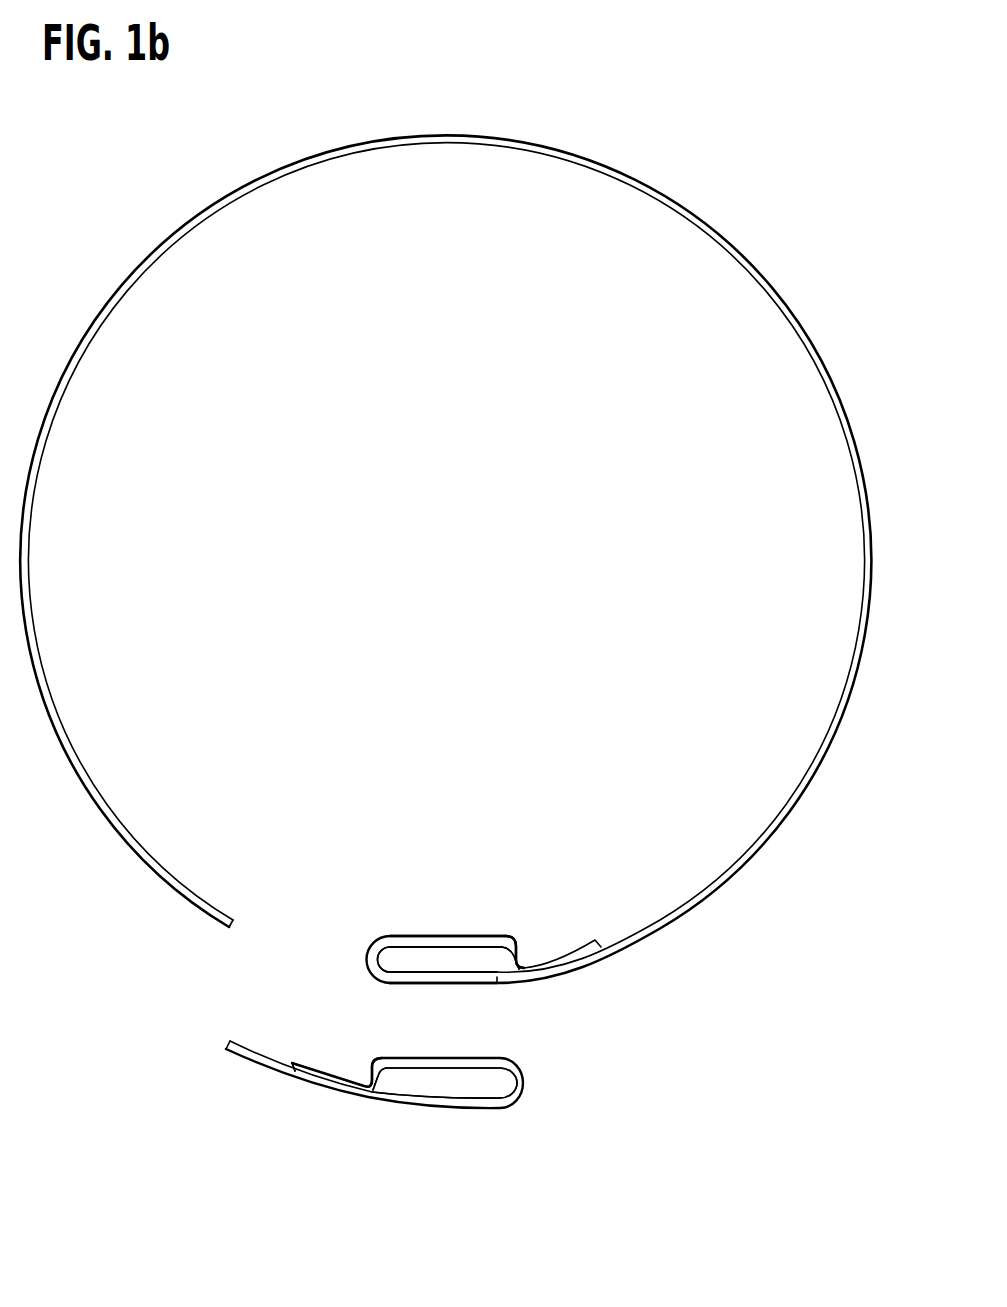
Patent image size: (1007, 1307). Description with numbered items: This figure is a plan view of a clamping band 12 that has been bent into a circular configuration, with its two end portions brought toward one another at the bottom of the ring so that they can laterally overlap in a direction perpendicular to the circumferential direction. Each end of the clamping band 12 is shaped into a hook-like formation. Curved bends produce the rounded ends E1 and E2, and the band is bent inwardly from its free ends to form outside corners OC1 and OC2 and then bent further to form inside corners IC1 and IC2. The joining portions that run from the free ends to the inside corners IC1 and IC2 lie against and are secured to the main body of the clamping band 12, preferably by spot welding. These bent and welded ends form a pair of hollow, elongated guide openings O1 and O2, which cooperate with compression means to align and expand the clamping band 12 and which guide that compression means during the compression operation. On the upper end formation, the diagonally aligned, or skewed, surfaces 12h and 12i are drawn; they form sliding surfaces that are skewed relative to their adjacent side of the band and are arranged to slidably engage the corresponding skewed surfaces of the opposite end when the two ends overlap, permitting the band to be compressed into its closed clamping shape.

The clamping band 12 is at (192, 186).
The skewed surface 12h is at (412, 940).
The skewed surface 12i is at (405, 983).
The rounded end E1 is at (527, 1083).
The rounded end E2 is at (368, 953).
The guide opening O1 is at (493, 1083).
The guide opening O2 is at (463, 962).
The outside corner OC1 is at (373, 1068).
The outside corner OC2 is at (521, 958).
The inside corner IC1 is at (366, 1084).
The inside corner IC2 is at (528, 962).